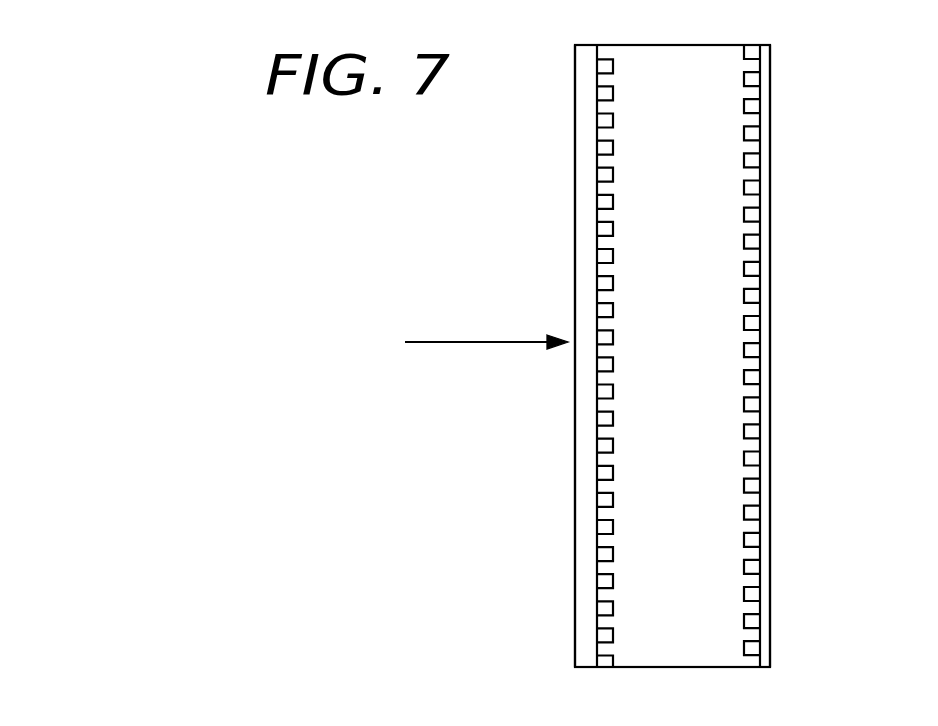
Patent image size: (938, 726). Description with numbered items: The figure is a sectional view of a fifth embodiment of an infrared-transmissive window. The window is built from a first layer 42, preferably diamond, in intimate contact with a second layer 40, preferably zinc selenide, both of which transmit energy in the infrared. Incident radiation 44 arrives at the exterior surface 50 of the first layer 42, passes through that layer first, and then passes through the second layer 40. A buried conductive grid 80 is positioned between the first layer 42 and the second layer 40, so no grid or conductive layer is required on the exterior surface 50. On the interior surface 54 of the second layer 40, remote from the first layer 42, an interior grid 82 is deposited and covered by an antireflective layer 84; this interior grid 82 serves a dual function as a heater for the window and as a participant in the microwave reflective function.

The second layer 40 is at (680, 648).
The first layer 42 is at (590, 644).
The incident radiation 44 is at (457, 342).
The exterior surface 50 is at (576, 556).
The interior surface 54 is at (745, 498).
The buried conductive grid 80 is at (604, 660).
The interior grid 82 is at (753, 592).
The antireflective layer 84 is at (762, 634).